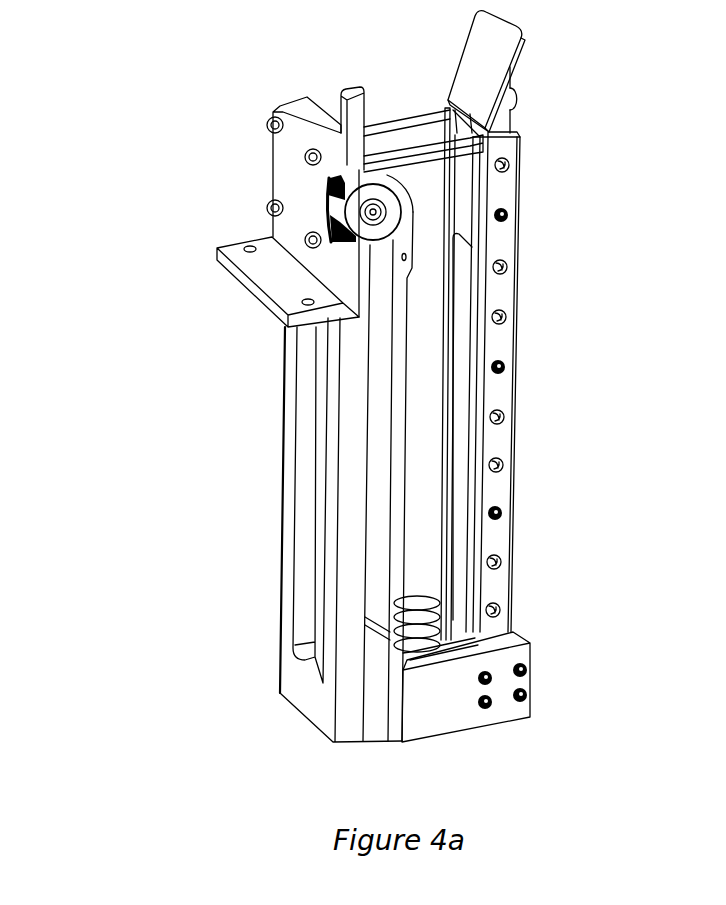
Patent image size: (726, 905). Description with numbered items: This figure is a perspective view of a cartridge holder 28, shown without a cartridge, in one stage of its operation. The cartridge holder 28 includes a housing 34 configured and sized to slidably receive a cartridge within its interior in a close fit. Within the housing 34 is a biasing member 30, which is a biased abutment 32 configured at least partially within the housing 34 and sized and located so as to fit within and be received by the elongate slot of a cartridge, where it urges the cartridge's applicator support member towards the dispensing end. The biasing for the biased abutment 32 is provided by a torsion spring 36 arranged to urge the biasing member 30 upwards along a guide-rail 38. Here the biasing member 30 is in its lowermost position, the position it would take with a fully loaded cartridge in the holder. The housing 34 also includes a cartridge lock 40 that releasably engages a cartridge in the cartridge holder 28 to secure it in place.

The cartridge holder 28 is at (545, 207).
The biasing member 30 is at (498, 708).
The biased abutment 32 is at (380, 677).
The housing 34 is at (348, 500).
The torsion spring 36 is at (356, 205).
The guide-rail 38 is at (503, 294).
The cartridge lock 40 is at (518, 63).